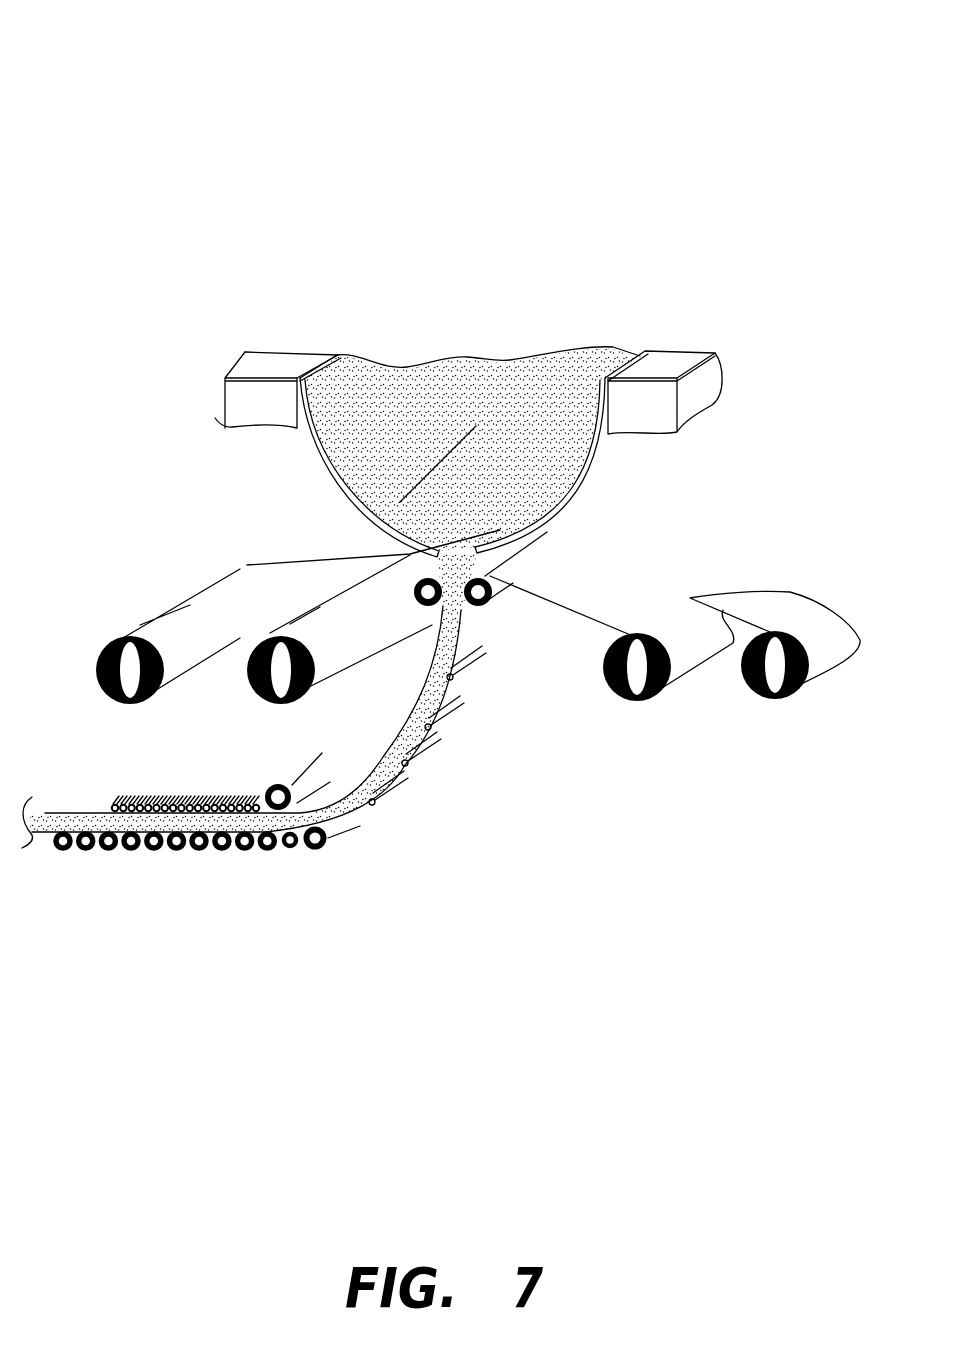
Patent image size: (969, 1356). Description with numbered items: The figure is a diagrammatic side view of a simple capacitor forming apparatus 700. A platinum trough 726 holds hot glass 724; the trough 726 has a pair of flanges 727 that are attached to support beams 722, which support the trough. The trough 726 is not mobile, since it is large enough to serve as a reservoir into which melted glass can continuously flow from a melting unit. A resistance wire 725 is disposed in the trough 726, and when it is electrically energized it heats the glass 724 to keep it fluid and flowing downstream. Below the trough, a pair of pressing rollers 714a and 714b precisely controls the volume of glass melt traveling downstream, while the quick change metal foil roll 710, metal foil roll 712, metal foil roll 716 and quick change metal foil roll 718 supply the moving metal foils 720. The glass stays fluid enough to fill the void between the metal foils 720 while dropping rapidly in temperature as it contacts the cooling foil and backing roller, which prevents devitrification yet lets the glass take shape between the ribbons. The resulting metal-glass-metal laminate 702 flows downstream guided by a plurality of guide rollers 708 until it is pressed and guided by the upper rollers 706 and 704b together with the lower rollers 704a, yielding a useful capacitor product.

The capacitor forming apparatus 700 is at (782, 105).
The metal-glass-metal laminate 702 is at (45, 812).
The lower rollers 704a is at (327, 865).
The upper rollers 704b is at (258, 770).
The upper roller 706 is at (322, 765).
The guide rollers 708 is at (508, 677).
The quick change metal foil roll 710 is at (98, 655).
The metal foil roll 712 is at (272, 640).
The pressing roller 714a is at (428, 606).
The pressing roller 714b is at (480, 606).
The metal foil roll 716 is at (643, 700).
The quick change metal foil roll 718 is at (790, 695).
The metal foils 720 is at (377, 582).
The support beams 722 is at (262, 417).
The hot glass 724 is at (513, 373).
The resistance wire 725 is at (423, 483).
The platinum trough 726 is at (553, 517).
The flanges 727 is at (283, 373).